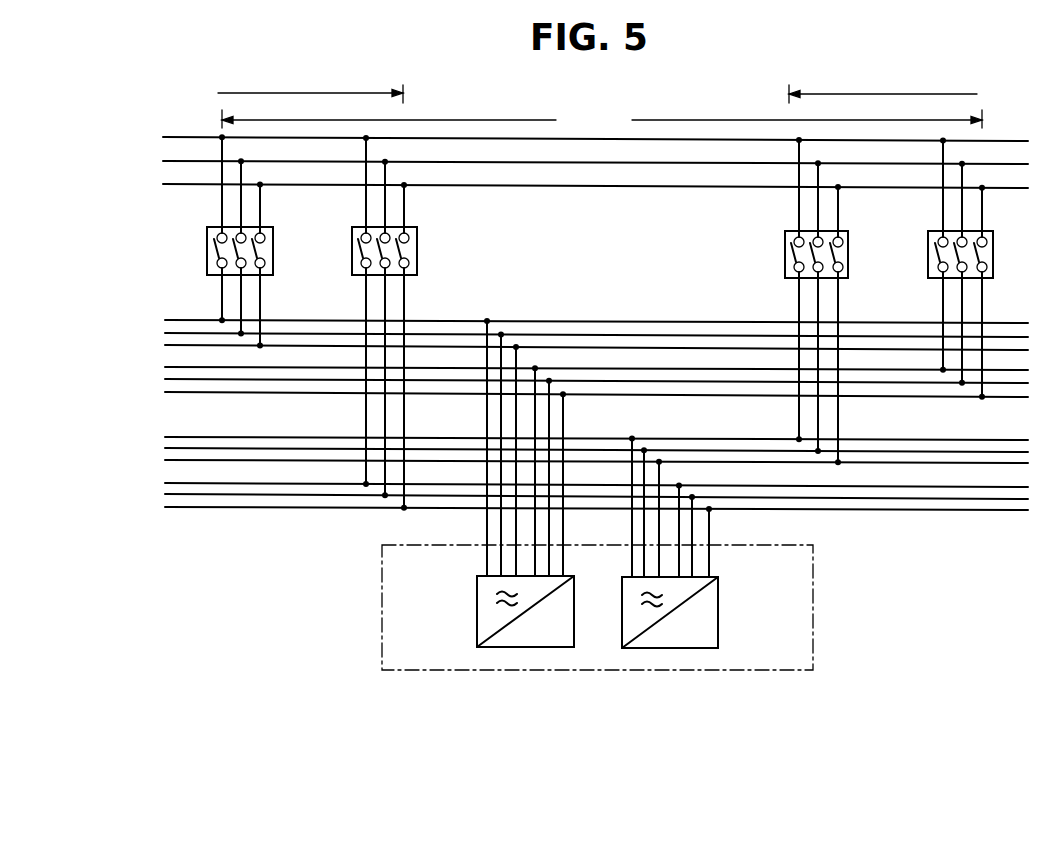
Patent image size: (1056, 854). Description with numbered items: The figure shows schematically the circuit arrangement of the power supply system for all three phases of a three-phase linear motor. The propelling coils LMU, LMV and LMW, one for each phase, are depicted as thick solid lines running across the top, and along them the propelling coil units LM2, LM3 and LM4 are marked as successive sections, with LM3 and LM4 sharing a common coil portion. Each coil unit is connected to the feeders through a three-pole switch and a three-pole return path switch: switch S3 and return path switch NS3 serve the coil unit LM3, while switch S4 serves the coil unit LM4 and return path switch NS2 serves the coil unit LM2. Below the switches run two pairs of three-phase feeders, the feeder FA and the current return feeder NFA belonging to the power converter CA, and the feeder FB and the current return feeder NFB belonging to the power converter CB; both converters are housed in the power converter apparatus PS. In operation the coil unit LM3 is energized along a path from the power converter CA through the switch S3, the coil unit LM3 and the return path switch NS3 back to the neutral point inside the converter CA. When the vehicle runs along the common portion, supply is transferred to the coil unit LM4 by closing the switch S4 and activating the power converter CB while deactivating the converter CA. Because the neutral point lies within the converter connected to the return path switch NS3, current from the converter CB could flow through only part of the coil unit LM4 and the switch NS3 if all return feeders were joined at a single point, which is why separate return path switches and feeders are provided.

The propelling coil (U phase) LMU is at (163, 139).
The propelling coil (V phase) LMV is at (163, 163).
The propelling coil (W phase) LMW is at (166, 186).
The propelling coil unit LM2 is at (282, 95).
The propelling coil unit LM3 is at (602, 122).
The propelling coil unit LM4 is at (912, 96).
The switch S3 is at (204, 257).
The return path switch NS2 is at (353, 250).
The switch S4 is at (784, 257).
The return path switch NS3 is at (925, 259).
The feeder FA is at (153, 314).
The current return feeder NFA is at (153, 361).
The feeder FB is at (153, 431).
The current return feeder NFB is at (153, 478).
The power converter CA is at (477, 601).
The power converter CB is at (720, 598).
The power converter apparatus PS is at (632, 494).